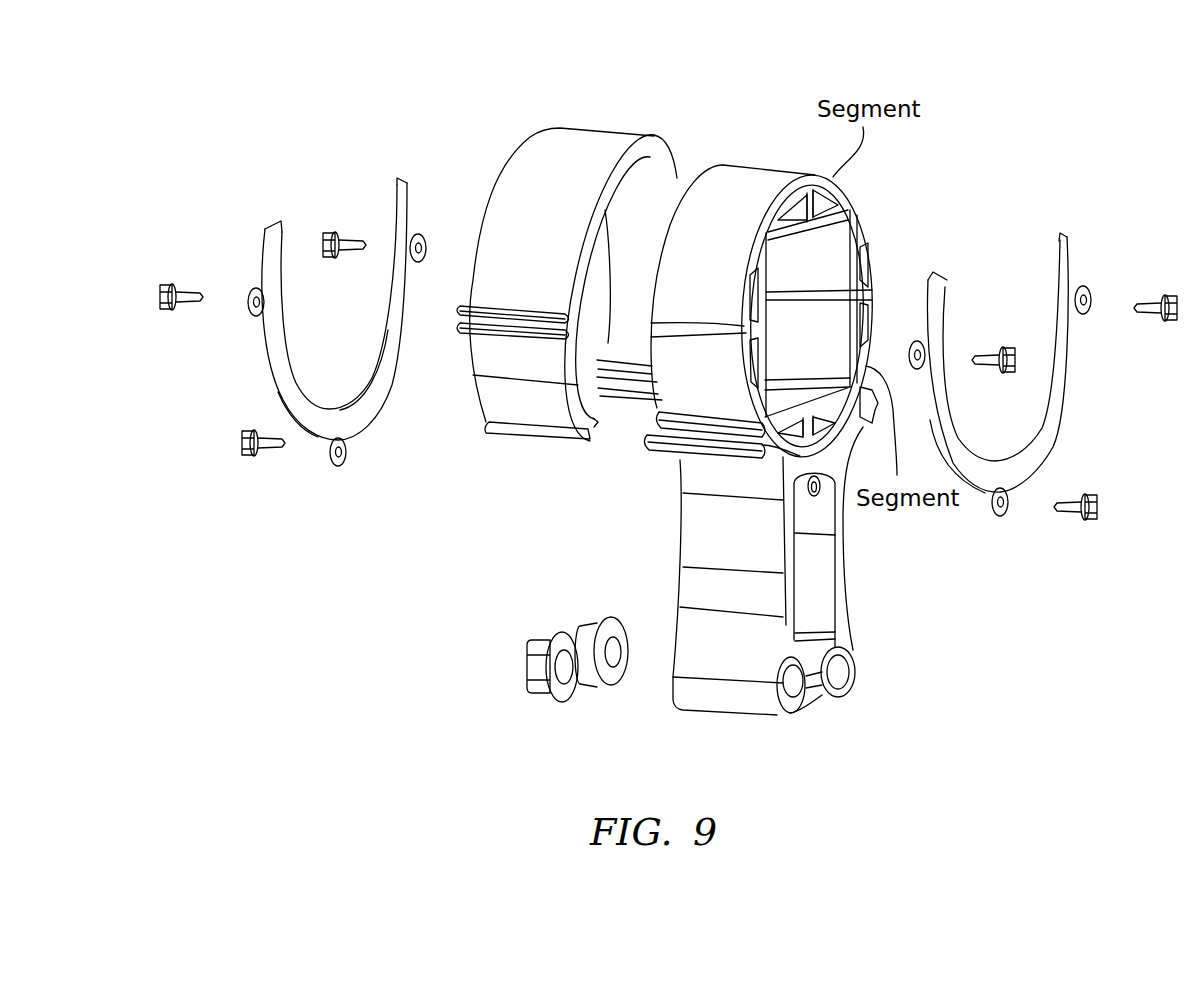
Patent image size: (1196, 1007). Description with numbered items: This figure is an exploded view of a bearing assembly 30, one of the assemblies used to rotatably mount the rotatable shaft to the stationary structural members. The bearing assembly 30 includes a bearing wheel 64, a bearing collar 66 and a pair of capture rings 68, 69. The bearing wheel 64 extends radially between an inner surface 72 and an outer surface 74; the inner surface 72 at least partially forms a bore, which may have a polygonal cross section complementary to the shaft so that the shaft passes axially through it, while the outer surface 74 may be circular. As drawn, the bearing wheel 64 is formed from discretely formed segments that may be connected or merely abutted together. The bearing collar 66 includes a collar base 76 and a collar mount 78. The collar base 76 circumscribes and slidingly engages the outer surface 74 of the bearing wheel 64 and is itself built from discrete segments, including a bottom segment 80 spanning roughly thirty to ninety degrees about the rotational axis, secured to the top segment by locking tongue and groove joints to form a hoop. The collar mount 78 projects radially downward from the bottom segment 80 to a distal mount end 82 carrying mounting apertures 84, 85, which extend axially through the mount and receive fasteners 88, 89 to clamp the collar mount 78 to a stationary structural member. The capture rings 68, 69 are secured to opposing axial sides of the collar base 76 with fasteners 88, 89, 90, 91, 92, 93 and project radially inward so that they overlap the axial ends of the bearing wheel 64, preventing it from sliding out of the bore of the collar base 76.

The bearing assembly 30 is at (668, 411).
The bearing wheel 64 is at (878, 213).
The bearing collar 66 is at (597, 477).
The capture ring 68 is at (270, 390).
The capture ring 69 is at (1057, 425).
The inner surface 72 is at (833, 253).
The outer surface 74 is at (765, 170).
The collar base 76 is at (540, 454).
The collar mount 78 is at (811, 424).
The bottom segment 80 is at (672, 460).
The distal mount end 82 is at (818, 703).
The mounting aperture 84 is at (840, 668).
The mounting aperture 85 is at (790, 687).
The fastener 88 is at (193, 283).
The fastener 89 is at (610, 687).
The fastener 90 is at (337, 232).
The fastener 91 is at (1148, 297).
The fastener 92 is at (990, 348).
The fastener 93 is at (1058, 525).